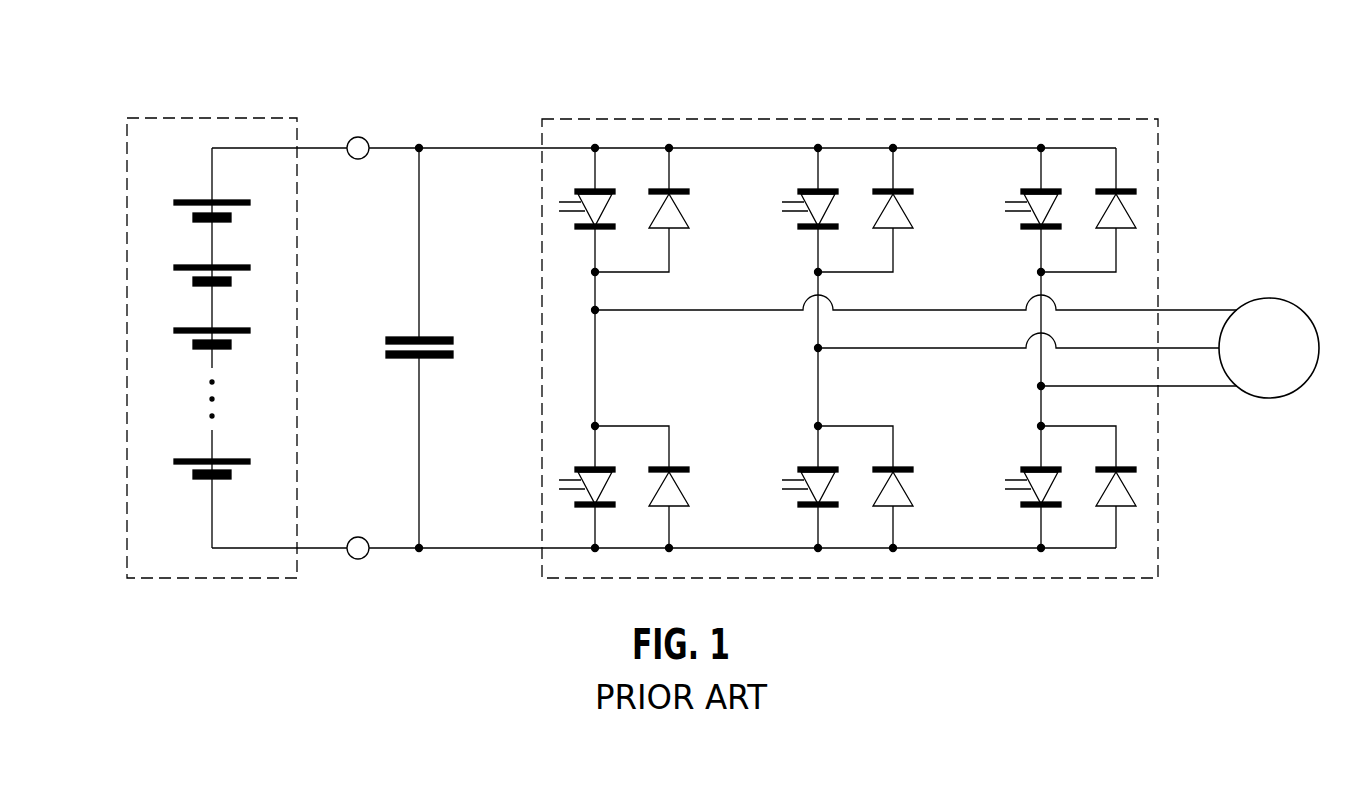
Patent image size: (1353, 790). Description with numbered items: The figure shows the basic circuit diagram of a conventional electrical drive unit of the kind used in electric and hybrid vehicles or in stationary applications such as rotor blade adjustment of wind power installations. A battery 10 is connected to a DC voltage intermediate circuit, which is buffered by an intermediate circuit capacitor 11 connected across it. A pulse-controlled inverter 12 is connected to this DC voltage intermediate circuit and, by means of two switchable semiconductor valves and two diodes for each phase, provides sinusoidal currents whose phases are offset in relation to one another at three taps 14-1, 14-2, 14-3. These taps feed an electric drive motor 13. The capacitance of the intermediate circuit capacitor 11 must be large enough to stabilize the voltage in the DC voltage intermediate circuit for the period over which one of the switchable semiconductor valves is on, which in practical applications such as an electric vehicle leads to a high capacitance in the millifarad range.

The battery 10 is at (170, 118).
The intermediate circuit capacitor 11 is at (428, 337).
The pulse-controlled inverter 12 is at (855, 118).
The electric drive motor 13 is at (1269, 298).
The tap 14-1 is at (595, 310).
The tap 14-2 is at (818, 348).
The tap 14-3 is at (1041, 386).